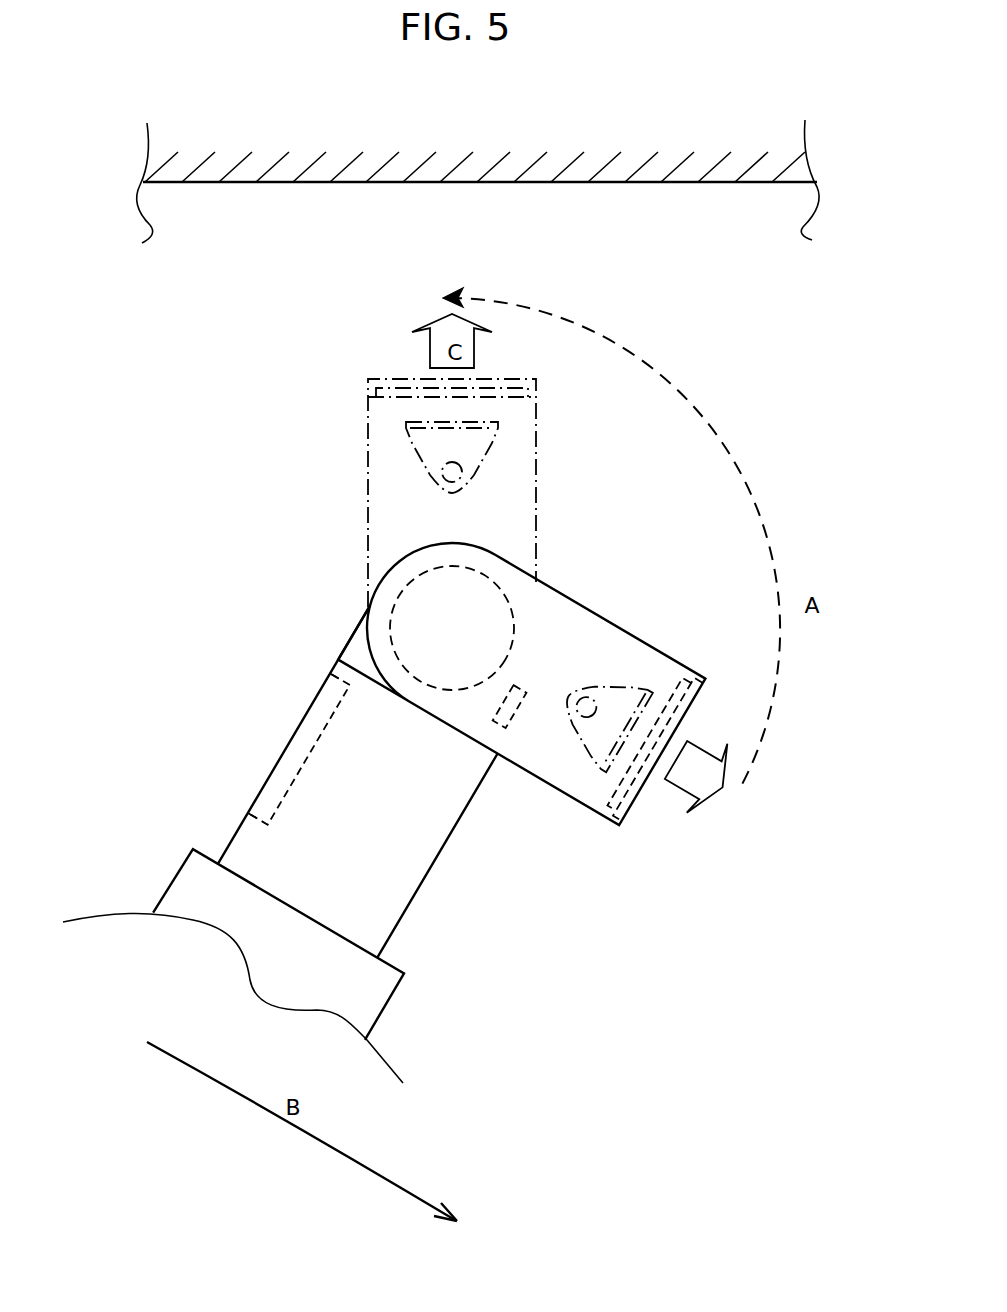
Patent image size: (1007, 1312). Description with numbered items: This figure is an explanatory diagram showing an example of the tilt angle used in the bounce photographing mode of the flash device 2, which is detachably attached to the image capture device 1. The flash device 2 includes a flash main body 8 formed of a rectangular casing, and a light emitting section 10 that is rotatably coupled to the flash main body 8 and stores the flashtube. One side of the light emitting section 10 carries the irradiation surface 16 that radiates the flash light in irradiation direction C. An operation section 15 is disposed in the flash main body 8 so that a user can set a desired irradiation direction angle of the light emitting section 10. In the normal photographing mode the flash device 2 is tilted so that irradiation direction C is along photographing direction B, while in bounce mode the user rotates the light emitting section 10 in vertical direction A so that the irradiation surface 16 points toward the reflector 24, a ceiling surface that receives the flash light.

The image capture device 1 is at (385, 1010).
The flash device 2 is at (335, 659).
The flash main body 8 is at (450, 835).
The light emitting section 10 is at (600, 616).
The operation section 15 is at (277, 765).
The irradiation surface 16 is at (402, 380).
The reflector 24 is at (687, 182).